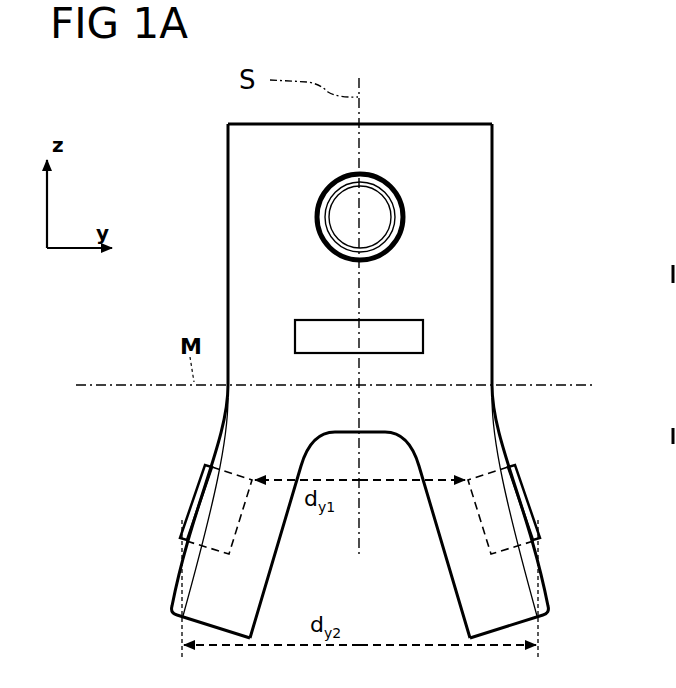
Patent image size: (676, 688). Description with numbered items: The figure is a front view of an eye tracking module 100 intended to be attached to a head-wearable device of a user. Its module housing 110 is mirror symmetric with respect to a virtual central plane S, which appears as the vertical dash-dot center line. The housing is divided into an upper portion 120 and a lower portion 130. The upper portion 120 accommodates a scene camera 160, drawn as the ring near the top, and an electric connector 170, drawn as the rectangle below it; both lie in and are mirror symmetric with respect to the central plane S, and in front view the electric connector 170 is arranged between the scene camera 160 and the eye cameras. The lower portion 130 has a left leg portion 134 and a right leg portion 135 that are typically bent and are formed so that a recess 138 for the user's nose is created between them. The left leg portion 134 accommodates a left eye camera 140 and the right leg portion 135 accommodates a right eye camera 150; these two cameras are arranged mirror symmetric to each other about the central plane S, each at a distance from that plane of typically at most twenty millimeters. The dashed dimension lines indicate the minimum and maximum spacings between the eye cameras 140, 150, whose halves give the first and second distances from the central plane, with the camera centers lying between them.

The eye tracking module 100 is at (386, 50).
The module housing 110 is at (446, 118).
The upper portion 120 is at (192, 301).
The lower portion 130 is at (146, 581).
The left leg portion 134 is at (568, 552).
The right leg portion 135 is at (301, 546).
The recess 138 is at (398, 619).
The left eye camera 140 is at (544, 499).
The right eye camera 150 is at (167, 496).
The scene camera 160 is at (418, 218).
The electric connector 170 is at (443, 339).